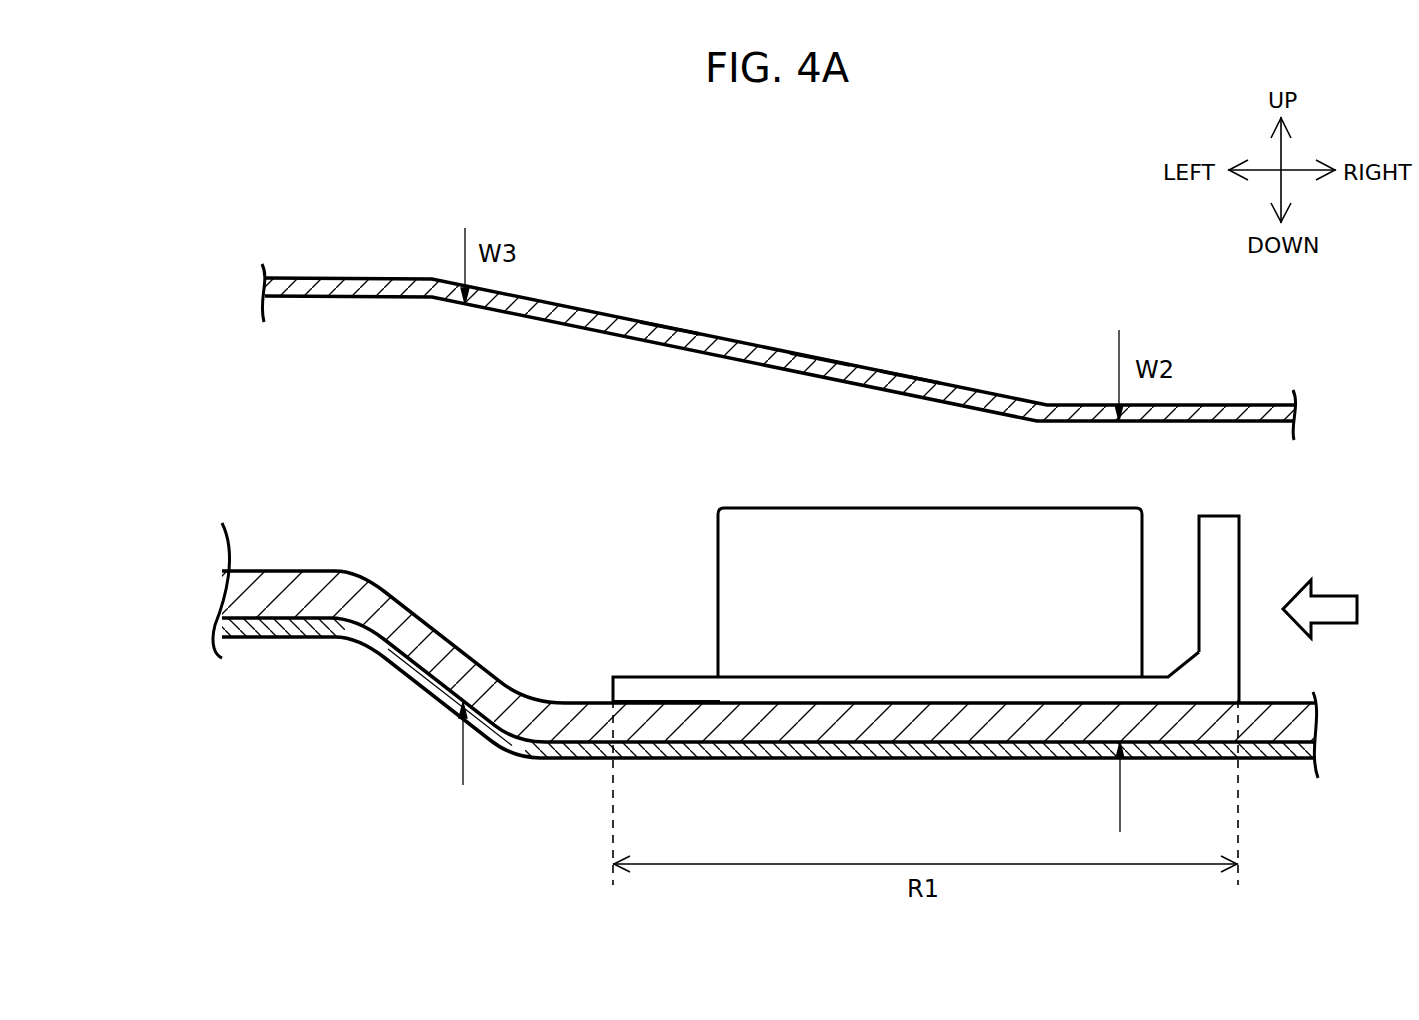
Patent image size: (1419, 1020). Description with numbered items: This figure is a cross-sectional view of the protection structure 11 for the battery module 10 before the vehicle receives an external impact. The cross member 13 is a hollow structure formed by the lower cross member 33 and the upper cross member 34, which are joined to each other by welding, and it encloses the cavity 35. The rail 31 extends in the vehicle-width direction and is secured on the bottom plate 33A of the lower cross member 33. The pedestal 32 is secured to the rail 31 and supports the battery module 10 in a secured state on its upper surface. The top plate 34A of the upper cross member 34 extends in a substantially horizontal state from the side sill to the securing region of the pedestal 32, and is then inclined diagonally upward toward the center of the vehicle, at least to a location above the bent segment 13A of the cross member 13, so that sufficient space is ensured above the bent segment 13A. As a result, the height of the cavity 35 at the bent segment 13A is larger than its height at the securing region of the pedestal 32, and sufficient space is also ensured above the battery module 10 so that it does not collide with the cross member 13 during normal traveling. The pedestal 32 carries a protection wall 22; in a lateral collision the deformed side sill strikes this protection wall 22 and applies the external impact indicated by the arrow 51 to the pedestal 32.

The battery module 10 is at (825, 527).
The protection structure 11 is at (962, 172).
The cross member 13 is at (752, 254).
The bent segment 13A is at (414, 688).
The protection wall 22 is at (1225, 530).
The rail 31 is at (240, 595).
The pedestal 32 is at (646, 672).
The lower cross member 33 is at (1280, 762).
The bottom plate 33A is at (312, 626).
The upper cross member 34 is at (819, 355).
The top plate 34A is at (676, 330).
The cavity 35 is at (912, 432).
The arrow 51 is at (1333, 628).